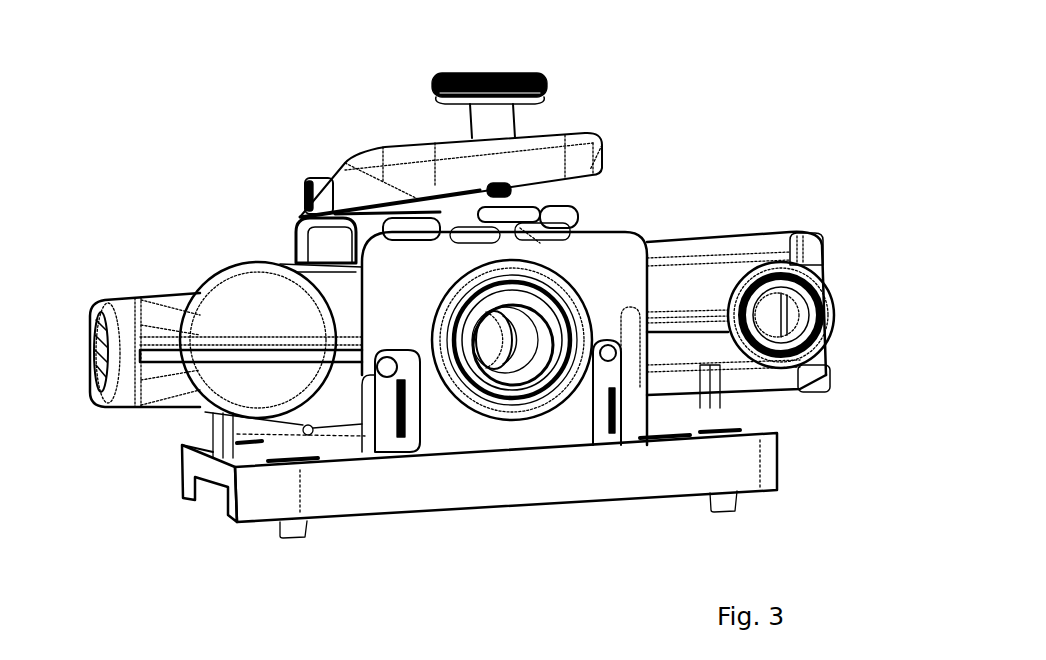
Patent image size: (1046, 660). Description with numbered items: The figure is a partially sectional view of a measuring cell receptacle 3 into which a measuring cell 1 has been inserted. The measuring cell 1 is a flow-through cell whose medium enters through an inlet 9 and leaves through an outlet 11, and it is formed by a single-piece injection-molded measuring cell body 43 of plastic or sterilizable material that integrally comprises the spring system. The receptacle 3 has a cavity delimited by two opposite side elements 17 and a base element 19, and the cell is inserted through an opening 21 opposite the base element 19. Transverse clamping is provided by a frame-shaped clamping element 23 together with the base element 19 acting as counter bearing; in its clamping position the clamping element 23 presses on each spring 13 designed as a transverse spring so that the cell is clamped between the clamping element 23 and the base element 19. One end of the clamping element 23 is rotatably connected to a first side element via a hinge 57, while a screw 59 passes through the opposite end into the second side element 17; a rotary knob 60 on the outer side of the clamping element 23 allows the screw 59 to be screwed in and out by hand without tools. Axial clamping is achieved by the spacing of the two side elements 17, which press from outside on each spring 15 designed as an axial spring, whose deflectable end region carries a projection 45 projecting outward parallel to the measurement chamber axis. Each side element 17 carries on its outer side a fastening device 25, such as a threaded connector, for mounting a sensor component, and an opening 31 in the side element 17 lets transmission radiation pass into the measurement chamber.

The measuring cell 1 is at (733, 222).
The measuring cell receptacle 3 is at (463, 428).
The inlet 9 is at (100, 378).
The outlet 11 is at (818, 343).
The spring 13 is at (423, 232).
The spring 15 is at (388, 407).
The side element 17 is at (390, 305).
The base element 19 is at (500, 497).
The opening 21 is at (335, 248).
The clamping element 23 is at (443, 163).
The fastening device 25 is at (587, 288).
The opening 31 is at (510, 350).
The measuring cell body 43 is at (698, 343).
The projection 45 is at (312, 432).
The hinge 57 is at (305, 190).
The screw 59 is at (508, 184).
The rotary knob 60 is at (525, 72).